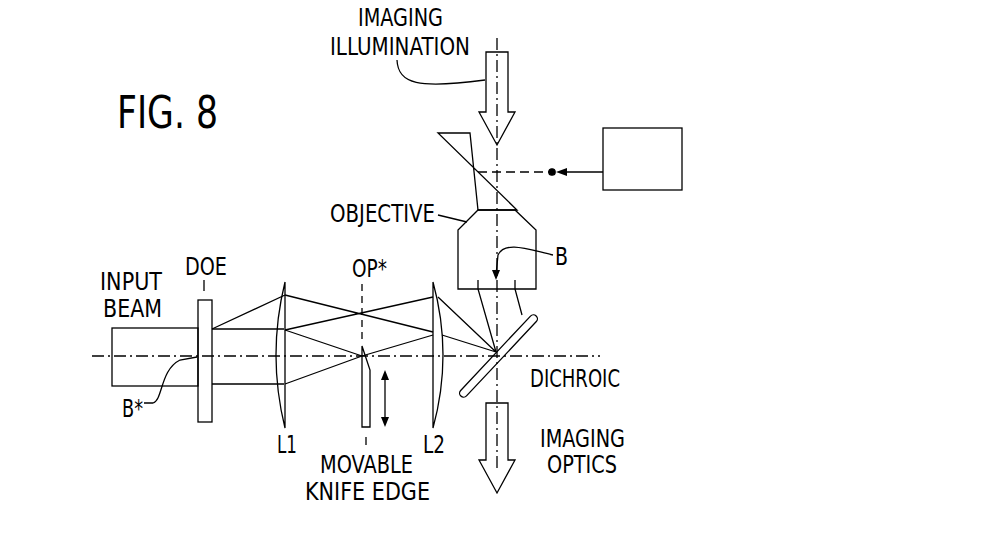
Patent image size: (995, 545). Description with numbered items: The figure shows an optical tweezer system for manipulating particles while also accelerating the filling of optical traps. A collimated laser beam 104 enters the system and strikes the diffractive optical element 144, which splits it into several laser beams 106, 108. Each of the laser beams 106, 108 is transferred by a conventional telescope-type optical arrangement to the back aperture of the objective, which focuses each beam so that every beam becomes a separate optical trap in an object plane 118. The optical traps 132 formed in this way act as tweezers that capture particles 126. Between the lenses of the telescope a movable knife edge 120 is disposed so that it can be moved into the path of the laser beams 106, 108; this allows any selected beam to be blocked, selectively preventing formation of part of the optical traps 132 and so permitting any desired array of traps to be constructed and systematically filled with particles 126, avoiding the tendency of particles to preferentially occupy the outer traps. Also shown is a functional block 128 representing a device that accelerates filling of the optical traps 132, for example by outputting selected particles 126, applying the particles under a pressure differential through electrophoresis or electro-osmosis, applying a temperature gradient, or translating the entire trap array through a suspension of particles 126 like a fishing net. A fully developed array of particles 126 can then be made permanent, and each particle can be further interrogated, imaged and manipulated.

The collimated laser beam 104 is at (113, 370).
The laser beam 106 is at (263, 317).
The laser beam 108 is at (242, 372).
The object plane 118 is at (536, 162).
The movable knife edge 120 is at (360, 412).
The particles 126 is at (552, 176).
The functional block 128 is at (660, 169).
The optical traps 132 is at (466, 173).
The diffractive optical element 144 is at (207, 425).